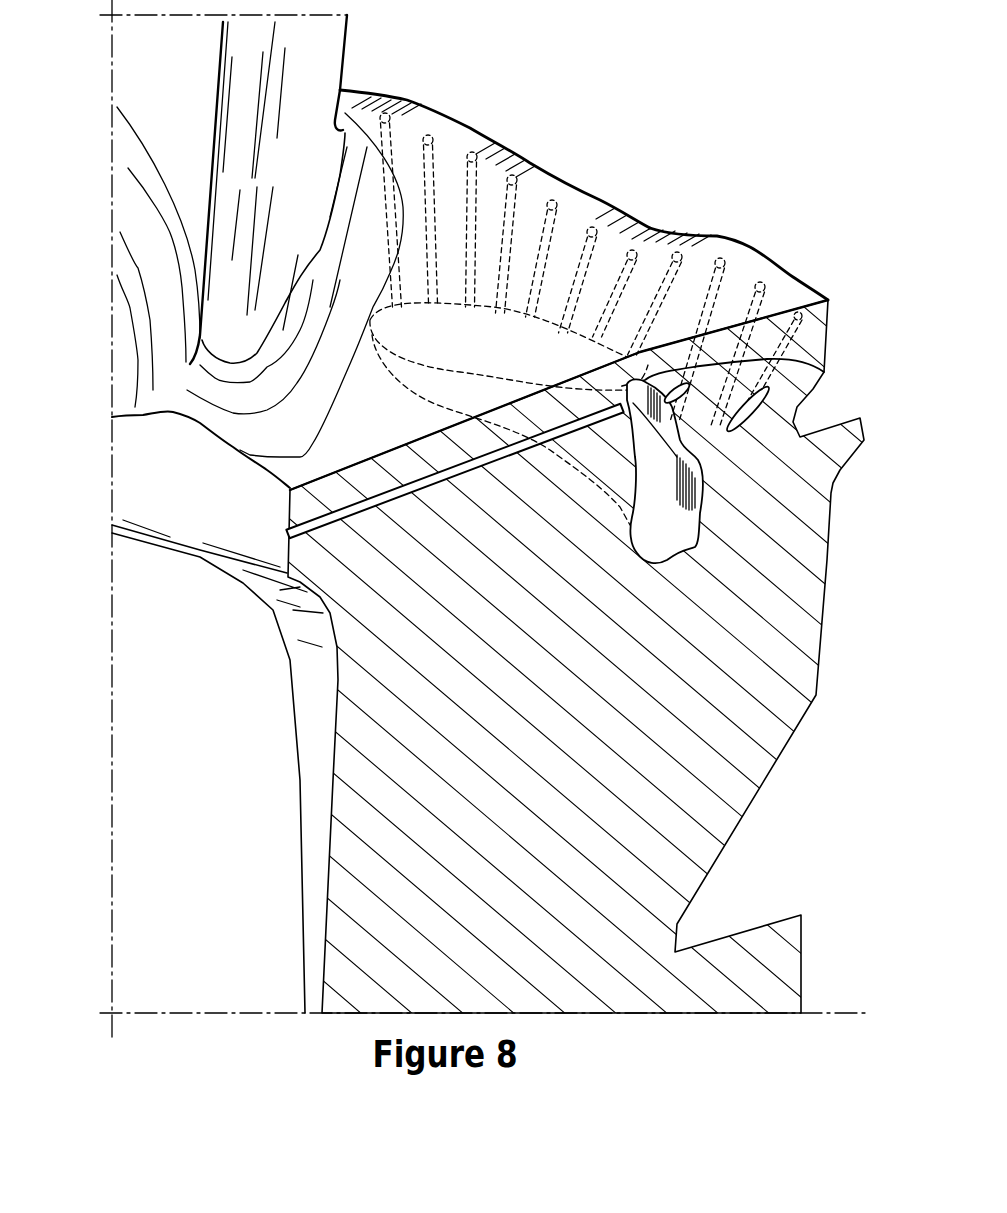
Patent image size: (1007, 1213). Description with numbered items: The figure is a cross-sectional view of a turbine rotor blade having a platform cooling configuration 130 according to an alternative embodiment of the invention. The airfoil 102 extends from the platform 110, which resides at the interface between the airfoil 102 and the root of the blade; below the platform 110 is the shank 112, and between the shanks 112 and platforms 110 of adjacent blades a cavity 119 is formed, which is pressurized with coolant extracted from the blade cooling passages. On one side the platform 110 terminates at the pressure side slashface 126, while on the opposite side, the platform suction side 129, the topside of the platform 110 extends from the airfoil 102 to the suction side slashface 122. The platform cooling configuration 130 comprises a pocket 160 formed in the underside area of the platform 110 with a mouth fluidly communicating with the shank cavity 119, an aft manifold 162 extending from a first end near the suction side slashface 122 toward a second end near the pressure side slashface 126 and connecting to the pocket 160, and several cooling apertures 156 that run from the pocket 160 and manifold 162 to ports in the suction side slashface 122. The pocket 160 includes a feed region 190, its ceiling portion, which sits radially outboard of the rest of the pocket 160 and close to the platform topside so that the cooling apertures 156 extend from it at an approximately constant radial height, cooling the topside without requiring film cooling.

The airfoil 102 is at (138, 78).
The platform 110 is at (344, 403).
The shank 112 is at (848, 533).
The cavity 119 is at (638, 540).
The suction side slashface 122 is at (690, 222).
The pressure side slashface 126 is at (151, 500).
The platform suction side 129 is at (533, 180).
The platform cooling configuration 130 is at (806, 252).
The cooling apertures 156 is at (395, 107).
The pocket 160 is at (451, 400).
The manifold 162 is at (375, 500).
The feed region 190 is at (823, 372).